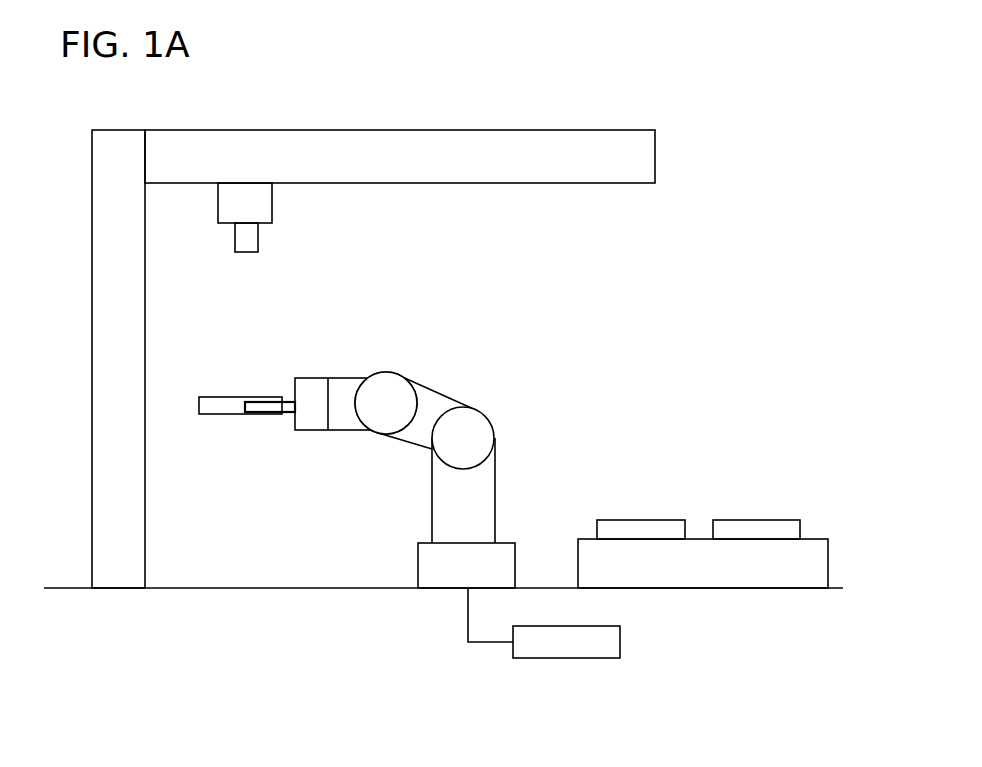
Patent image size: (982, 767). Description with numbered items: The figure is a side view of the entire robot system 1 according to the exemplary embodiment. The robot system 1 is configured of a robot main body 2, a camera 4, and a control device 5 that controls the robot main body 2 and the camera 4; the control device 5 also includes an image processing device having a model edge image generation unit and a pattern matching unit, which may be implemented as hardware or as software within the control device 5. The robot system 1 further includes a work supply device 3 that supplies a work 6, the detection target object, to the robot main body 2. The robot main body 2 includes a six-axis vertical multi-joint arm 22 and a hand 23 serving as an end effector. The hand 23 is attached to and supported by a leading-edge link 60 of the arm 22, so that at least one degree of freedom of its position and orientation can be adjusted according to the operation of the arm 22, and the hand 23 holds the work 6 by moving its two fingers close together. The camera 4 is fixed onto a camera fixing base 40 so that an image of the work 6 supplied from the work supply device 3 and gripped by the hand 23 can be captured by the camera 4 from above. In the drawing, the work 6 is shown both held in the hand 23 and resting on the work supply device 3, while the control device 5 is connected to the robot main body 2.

The robot system 1 is at (748, 147).
The robot main body 2 is at (527, 381).
The work supply device 3 is at (762, 610).
The camera 4 is at (298, 236).
The control device 5 is at (621, 641).
The work 6 is at (215, 396).
The arm 22 is at (378, 474).
The hand 23 is at (299, 446).
The camera fixing base 40 is at (463, 130).
The leading-edge link 60 is at (343, 378).